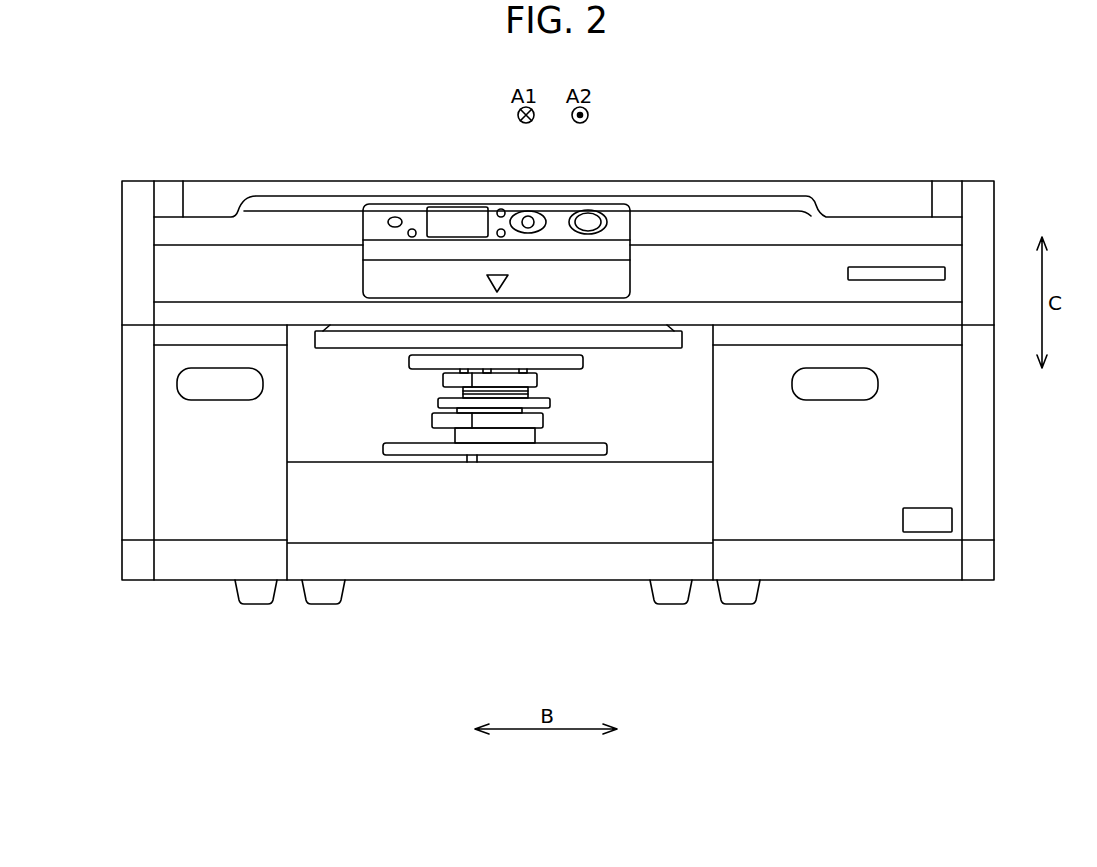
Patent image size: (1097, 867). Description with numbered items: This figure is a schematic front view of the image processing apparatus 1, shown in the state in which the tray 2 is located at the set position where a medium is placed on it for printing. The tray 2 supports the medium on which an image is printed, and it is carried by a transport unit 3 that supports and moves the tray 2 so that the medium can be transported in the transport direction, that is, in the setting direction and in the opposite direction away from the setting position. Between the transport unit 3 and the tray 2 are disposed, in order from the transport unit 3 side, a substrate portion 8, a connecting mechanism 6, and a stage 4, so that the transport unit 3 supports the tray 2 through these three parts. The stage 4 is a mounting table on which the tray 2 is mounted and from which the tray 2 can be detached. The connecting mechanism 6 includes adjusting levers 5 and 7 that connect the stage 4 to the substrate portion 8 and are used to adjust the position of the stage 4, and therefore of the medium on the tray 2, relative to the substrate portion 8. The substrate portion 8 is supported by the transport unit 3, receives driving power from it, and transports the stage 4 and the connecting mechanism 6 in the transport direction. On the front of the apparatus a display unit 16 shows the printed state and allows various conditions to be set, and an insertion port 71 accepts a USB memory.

The image processing apparatus 1 is at (972, 120).
The tray 2 is at (355, 340).
The transport unit 3 is at (473, 523).
The stage 4 is at (428, 364).
The adjusting lever 5 is at (508, 382).
The connecting mechanism 6 is at (571, 398).
The adjusting lever 7 is at (527, 422).
The substrate portion 8 is at (434, 447).
The display unit 16 is at (467, 222).
The insertion port 71 is at (952, 520).